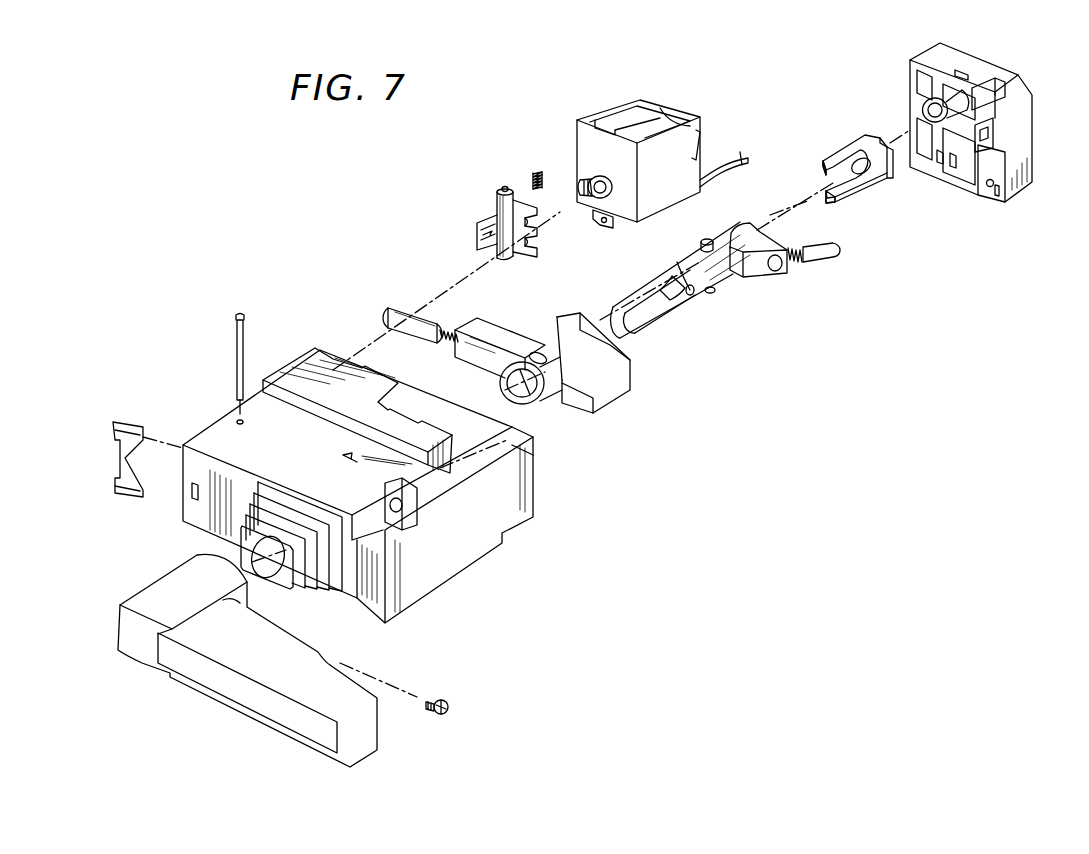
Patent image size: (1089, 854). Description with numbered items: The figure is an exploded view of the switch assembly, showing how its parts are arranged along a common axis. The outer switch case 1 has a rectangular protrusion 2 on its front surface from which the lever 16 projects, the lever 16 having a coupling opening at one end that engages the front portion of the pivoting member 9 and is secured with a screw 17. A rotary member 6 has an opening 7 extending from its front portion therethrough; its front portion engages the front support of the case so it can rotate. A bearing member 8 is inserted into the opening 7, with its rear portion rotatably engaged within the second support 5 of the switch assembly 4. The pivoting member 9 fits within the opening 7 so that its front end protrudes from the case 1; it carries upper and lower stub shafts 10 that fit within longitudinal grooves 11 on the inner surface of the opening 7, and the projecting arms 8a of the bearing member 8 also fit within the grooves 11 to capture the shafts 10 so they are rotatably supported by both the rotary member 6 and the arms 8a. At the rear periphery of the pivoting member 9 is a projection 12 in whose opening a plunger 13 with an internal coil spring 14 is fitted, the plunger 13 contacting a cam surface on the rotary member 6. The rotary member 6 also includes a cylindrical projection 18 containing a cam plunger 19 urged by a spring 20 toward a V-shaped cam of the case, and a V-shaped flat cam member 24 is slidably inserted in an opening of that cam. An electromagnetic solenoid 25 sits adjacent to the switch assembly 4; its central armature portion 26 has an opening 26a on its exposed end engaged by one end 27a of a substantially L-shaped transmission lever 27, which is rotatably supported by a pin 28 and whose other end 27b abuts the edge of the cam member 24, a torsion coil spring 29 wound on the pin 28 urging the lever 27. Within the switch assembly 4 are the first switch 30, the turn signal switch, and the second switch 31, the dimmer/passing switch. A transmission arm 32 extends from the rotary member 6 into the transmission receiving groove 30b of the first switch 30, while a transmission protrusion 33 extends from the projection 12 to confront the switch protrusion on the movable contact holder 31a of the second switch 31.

The switch case 1 is at (213, 427).
The rectangular protrusion 2 is at (322, 596).
The switch assembly 4 is at (1030, 133).
The second support 5 is at (922, 103).
The rotary member 6 is at (503, 380).
The opening 7 is at (532, 412).
The bearing member 8 is at (888, 172).
The projecting arms 8a is at (829, 160).
The pivoting member 9 is at (688, 302).
The stub shafts 10 is at (705, 239).
The longitudinal grooves 11 is at (542, 355).
The projection 12 is at (767, 276).
The plunger 13 is at (820, 262).
The coil spring 14 is at (793, 272).
The lever 16 is at (142, 665).
The screw 17 is at (450, 704).
The cylindrical projection 18 is at (509, 327).
The cam plunger 19 is at (413, 308).
The spring 20 is at (452, 330).
The cam member 24 is at (130, 422).
The electromagnetic solenoid 25 is at (643, 107).
The armature portion 26 is at (613, 184).
The opening 26a is at (597, 175).
The transmission lever 27 is at (497, 197).
The end of transmission lever 27a is at (540, 249).
The other end of transmission lever 27b is at (477, 240).
The pin 28 is at (244, 345).
The torsion coil spring 29 is at (535, 168).
The first switch 30 is at (948, 182).
The transmission receiving groove 30b is at (940, 168).
The second switch 31 is at (980, 100).
The movable contact holder 31a is at (972, 132).
The transmission arm 32 is at (578, 408).
The transmission protrusion 33 is at (812, 243).